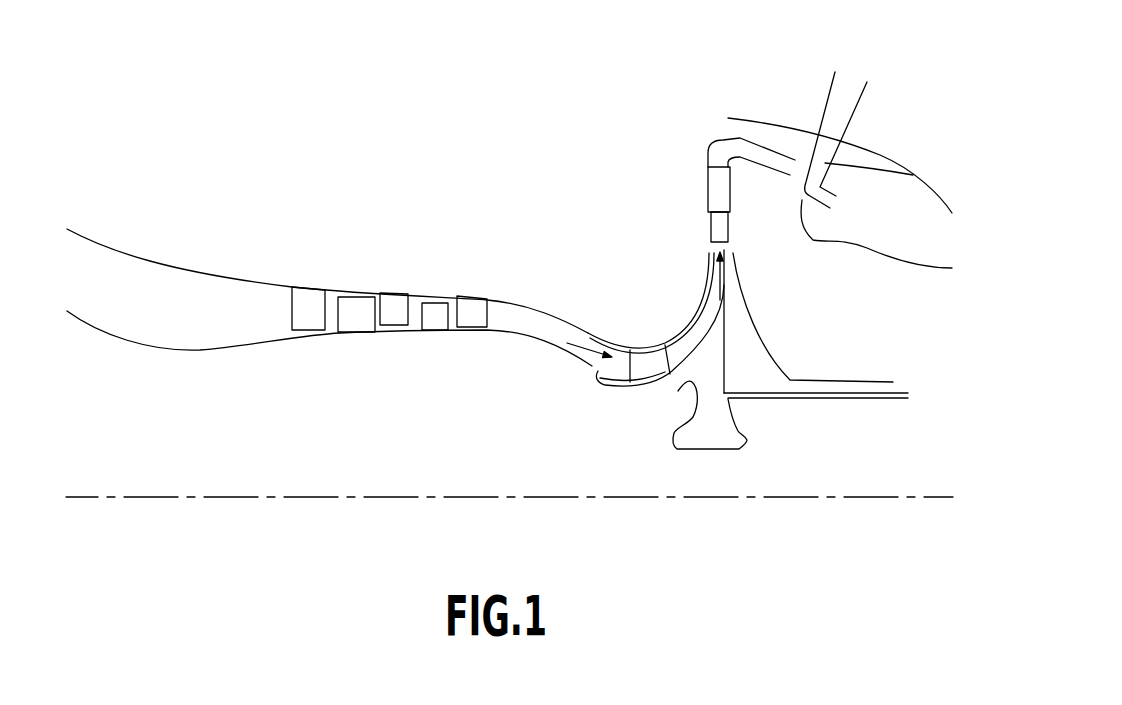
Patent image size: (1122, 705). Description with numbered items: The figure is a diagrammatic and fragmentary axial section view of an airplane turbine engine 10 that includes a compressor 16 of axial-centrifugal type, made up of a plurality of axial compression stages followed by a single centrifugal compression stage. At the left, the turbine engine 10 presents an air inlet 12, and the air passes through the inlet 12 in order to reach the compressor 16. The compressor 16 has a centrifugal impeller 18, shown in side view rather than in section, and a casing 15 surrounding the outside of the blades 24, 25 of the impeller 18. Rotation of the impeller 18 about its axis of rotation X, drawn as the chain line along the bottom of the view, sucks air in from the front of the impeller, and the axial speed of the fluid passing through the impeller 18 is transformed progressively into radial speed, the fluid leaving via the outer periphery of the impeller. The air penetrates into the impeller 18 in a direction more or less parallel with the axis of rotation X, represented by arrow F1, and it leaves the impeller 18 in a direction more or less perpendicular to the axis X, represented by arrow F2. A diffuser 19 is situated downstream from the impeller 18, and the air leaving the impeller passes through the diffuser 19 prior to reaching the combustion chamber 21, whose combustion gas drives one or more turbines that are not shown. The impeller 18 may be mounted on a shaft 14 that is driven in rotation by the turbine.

The turbine engine 10 is at (883, 62).
The air inlet 12 is at (80, 267).
The shaft 14 is at (880, 398).
The casing 15 is at (683, 333).
The compressor 16 is at (417, 265).
The centrifugal impeller 18 is at (640, 408).
The diffuser 19 is at (705, 188).
The combustion chamber 21 is at (930, 187).
The blade 24 is at (640, 372).
The blade 25 is at (690, 353).
The arrow F1 is at (585, 346).
The arrow F2 is at (723, 263).
The axis of rotation X is at (932, 497).